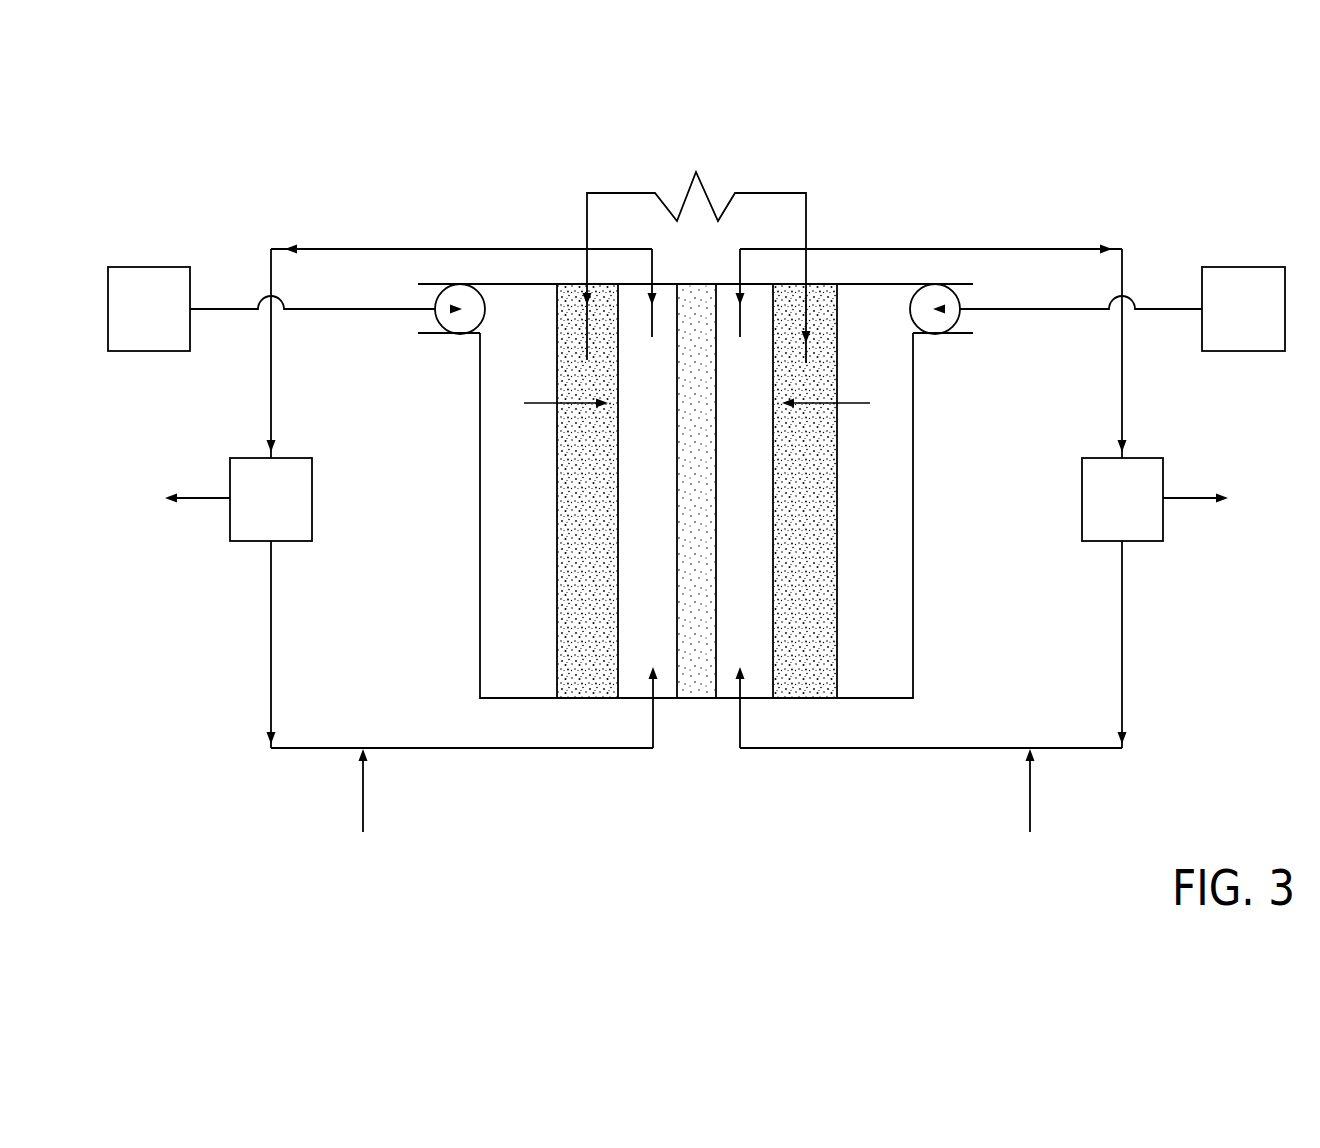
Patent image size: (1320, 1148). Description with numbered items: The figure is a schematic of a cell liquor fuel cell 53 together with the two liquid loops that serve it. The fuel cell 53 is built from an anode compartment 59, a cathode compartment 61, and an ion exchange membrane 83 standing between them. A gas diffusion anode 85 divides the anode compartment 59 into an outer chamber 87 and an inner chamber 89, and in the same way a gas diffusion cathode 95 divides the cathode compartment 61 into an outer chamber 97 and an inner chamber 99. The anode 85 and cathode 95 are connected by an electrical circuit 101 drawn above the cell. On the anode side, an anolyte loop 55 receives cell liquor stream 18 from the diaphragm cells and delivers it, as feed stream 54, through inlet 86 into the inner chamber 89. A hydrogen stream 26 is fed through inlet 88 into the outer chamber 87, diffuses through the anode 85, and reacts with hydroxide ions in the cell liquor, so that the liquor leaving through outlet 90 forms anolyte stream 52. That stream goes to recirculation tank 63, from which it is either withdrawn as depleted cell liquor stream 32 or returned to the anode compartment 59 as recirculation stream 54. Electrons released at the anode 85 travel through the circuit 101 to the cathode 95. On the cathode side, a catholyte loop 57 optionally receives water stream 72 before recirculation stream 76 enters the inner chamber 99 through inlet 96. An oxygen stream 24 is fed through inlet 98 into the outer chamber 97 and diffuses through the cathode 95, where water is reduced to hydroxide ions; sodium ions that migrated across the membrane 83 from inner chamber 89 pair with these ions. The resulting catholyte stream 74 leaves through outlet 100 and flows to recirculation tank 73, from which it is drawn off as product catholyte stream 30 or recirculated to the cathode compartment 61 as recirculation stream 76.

The cell liquor stream 18 is at (366, 805).
The oxygen stream 24 is at (1152, 300).
The hydrogen stream 26 is at (210, 308).
The catholyte stream 30 is at (1195, 497).
The depleted cell liquor stream 32 is at (198, 497).
The anolyte stream 52 is at (552, 249).
The fuel cell 53 is at (889, 158).
The recirculation stream 54 is at (330, 748).
The anolyte loop 55 is at (266, 636).
The catholyte loop 57 is at (838, 284).
The anode compartment 59 is at (476, 551).
The cathode compartment 61 is at (919, 604).
The recirculation tank 63 is at (312, 500).
The water stream 72 is at (1033, 793).
The recirculation tank 73 is at (1082, 507).
The catholyte stream 74 is at (830, 249).
The recirculation stream 76 is at (912, 750).
The ion exchange membrane 83 is at (697, 699).
The anode 85 is at (618, 513).
The inlet 86 is at (653, 699).
The outer chamber 87 is at (488, 631).
The inlet 88 is at (438, 315).
The inner chamber 89 is at (671, 300).
The outlet 90 is at (655, 322).
The cathode 95 is at (830, 545).
The inlet 96 is at (745, 692).
The outer chamber 97 is at (903, 392).
The inlet 98 is at (922, 320).
The inner chamber 99 is at (725, 303).
The outlet 100 is at (745, 318).
The electrical circuit 101 is at (632, 193).